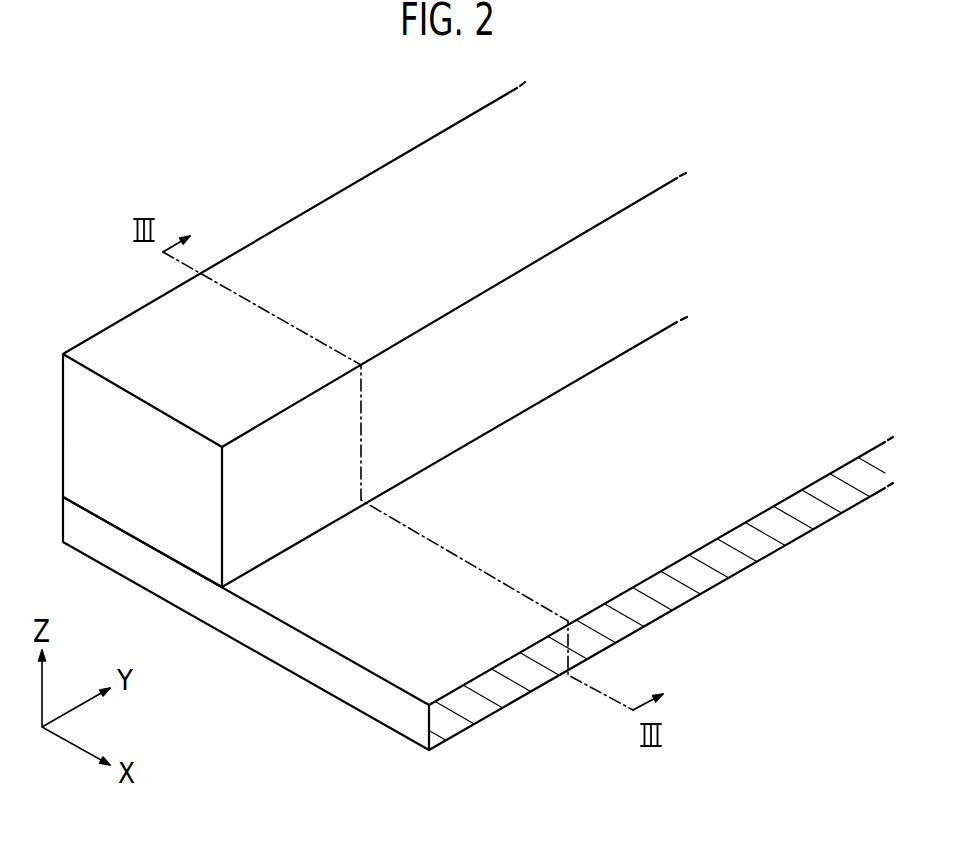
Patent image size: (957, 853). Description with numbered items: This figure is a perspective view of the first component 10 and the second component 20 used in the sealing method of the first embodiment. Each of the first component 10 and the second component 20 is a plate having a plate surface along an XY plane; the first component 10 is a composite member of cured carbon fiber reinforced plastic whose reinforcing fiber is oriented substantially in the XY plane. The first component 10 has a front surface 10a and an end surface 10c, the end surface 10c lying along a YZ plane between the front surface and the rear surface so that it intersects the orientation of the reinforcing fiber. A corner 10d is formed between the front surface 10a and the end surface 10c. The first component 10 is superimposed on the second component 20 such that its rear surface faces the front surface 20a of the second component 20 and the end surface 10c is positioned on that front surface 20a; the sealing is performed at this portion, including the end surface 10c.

The first component 10 is at (381, 334).
The front surface 10a is at (343, 218).
The end surface 10c is at (512, 317).
The corner 10d is at (640, 198).
The second component 20 is at (478, 491).
The front surface 20a is at (672, 537).